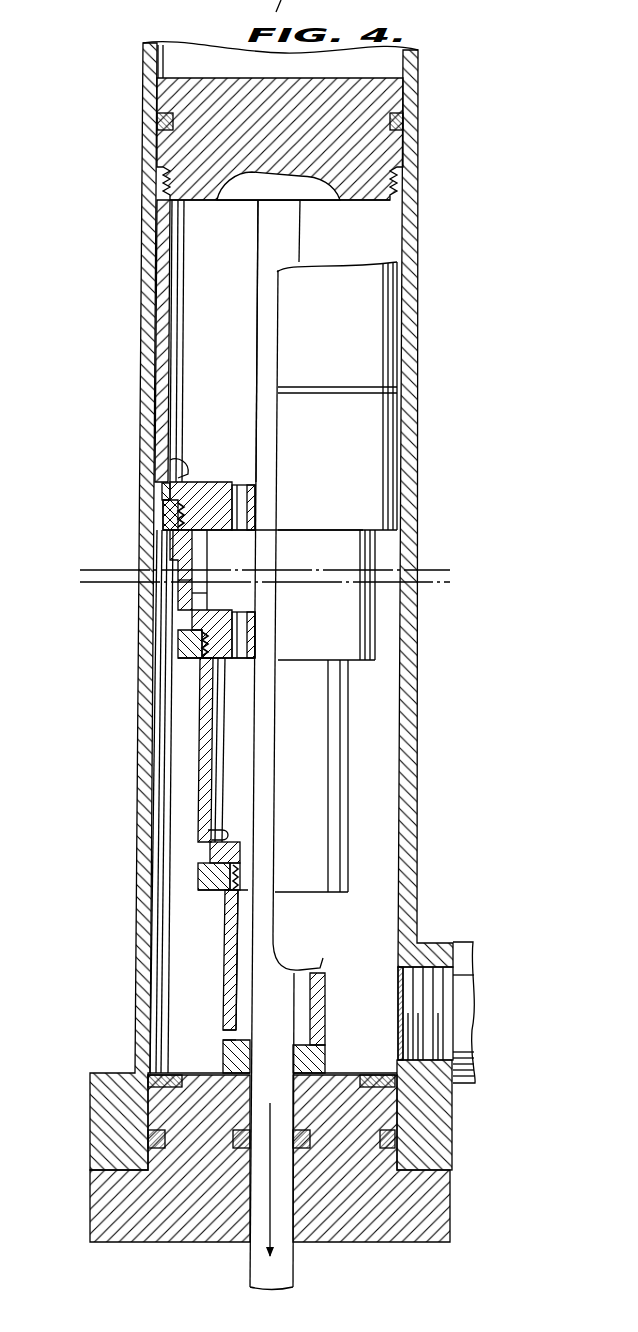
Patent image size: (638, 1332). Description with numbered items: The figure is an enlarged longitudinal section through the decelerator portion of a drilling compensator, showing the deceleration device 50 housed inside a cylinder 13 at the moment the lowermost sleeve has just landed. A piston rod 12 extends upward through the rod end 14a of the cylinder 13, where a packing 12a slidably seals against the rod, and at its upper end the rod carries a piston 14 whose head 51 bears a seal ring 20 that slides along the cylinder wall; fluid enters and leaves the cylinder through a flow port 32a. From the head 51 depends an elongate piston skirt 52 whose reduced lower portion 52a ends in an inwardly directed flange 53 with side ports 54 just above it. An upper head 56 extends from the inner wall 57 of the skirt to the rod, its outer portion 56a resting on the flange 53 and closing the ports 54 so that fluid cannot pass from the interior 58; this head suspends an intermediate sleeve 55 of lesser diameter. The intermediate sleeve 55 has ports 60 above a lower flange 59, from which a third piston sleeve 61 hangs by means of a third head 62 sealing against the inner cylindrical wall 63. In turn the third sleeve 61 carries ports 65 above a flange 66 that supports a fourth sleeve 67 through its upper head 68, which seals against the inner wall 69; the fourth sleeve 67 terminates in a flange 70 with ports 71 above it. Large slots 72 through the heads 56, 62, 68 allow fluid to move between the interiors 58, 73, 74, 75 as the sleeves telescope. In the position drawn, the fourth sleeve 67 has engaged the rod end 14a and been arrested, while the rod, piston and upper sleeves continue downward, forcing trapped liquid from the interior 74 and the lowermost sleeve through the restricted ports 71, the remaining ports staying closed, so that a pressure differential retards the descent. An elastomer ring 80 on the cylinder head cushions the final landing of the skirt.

The piston rod 12 is at (295, 1262).
The packing 12a is at (233, 1140).
The cylinder 13 is at (416, 738).
The piston 14 is at (408, 94).
The rod end 14a is at (100, 1203).
The seal ring 20 is at (405, 127).
The flow port 32a is at (432, 970).
The deceleration device 50 is at (392, 450).
The head 51 is at (177, 143).
The piston skirt 52 is at (163, 307).
The lower portion 52a is at (165, 412).
The flange 53 is at (170, 516).
The side ports 54 is at (165, 490).
The intermediate sleeve 55 is at (190, 545).
The upper head 56 is at (208, 481).
The outer portion 56a is at (182, 470).
The inner wall 57 is at (173, 330).
The interior 58 is at (197, 245).
The lower flange 59 is at (190, 651).
The ports 60 is at (185, 624).
The third piston sleeve 61 is at (208, 745).
The third head 62 is at (225, 612).
The inner cylindrical wall 63 is at (195, 596).
The ports 65 is at (213, 855).
The flange 66 is at (212, 880).
The fourth sleeve 67 is at (228, 960).
The upper head 68 is at (210, 830).
The inner wall 69 is at (218, 697).
The flange 70 is at (228, 1059).
The ports 71 is at (222, 1037).
The slots 72 is at (246, 492).
The interior 73 is at (240, 553).
The interior 74 is at (243, 730).
The interior 75 is at (243, 925).
The elastomer ring 80 is at (160, 1090).